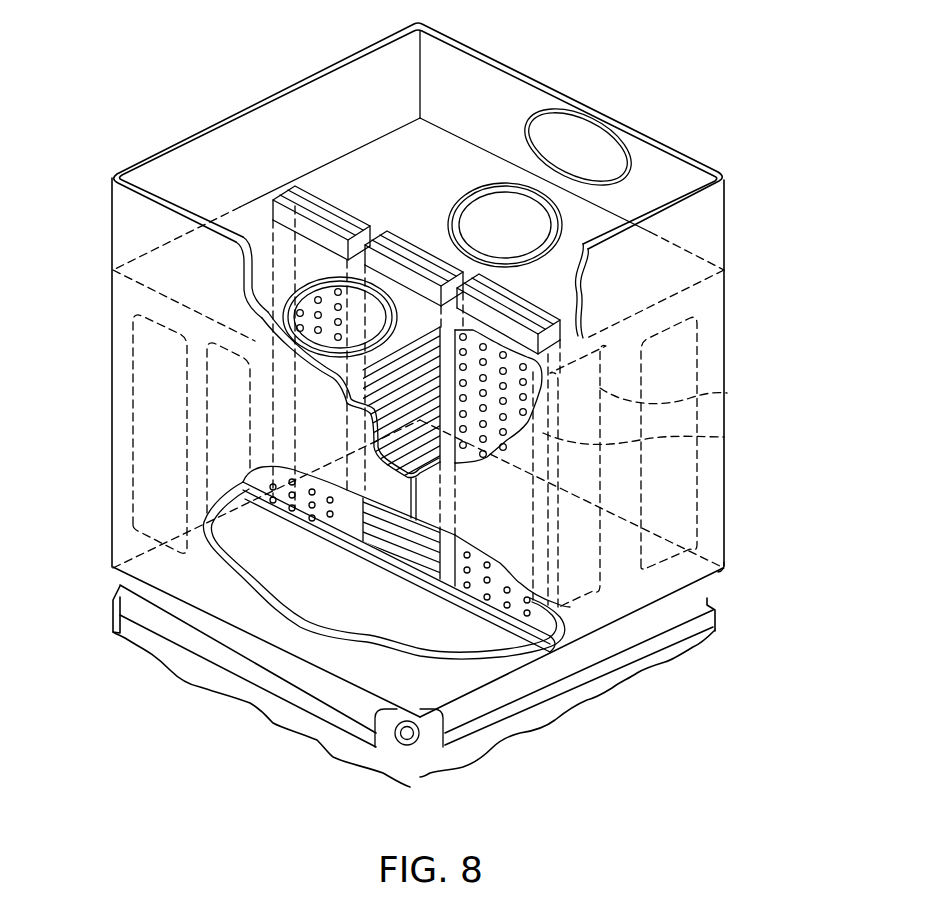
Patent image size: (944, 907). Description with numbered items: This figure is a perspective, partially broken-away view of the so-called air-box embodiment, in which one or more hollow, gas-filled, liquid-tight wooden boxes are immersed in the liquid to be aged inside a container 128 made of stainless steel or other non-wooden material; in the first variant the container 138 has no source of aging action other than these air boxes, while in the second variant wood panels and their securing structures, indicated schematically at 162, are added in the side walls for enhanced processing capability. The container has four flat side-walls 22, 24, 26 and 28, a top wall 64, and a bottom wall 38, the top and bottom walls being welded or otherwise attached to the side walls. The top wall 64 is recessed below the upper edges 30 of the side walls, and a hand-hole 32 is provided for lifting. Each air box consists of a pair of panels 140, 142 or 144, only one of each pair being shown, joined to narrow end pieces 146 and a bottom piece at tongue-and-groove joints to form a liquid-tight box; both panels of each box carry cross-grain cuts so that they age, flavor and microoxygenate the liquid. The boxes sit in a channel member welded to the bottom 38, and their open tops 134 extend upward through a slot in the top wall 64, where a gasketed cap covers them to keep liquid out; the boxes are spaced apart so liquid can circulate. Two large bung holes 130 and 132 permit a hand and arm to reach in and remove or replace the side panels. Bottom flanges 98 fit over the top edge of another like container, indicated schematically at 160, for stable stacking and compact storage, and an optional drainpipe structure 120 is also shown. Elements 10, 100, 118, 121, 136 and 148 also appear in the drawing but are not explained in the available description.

The section line indicator 10 is at (335, 246).
The side-wall 22 is at (483, 77).
The side-wall 24 is at (363, 83).
The side-wall 26 is at (127, 217).
The side-wall 28 is at (707, 220).
The upper edges of the side-walls 30 is at (172, 150).
The hand-hole 32 is at (600, 140).
The bottom wall 38 is at (713, 578).
The top wall 64 is at (240, 220).
The bottom flanges 98 is at (183, 632).
The corner fastening location 100 is at (100, 590).
The right hub bracket 118 is at (428, 745).
The drainpipe structure 120 is at (410, 747).
The left hub bracket 121 is at (392, 747).
The container 128 is at (642, 100).
The bung hole 130 is at (537, 235).
The bung hole 132 is at (377, 315).
The open tops of the boxes 134 is at (317, 193).
The second guide rail 136 is at (425, 247).
The container 138 is at (584, 290).
The panel 140 is at (287, 490).
The panel 142 is at (387, 567).
The panel 144 is at (490, 600).
The narrow end pieces 146 is at (724, 437).
The base rail 148 is at (447, 603).
The another like container 160 is at (123, 638).
The additional panels and securing structures 162 is at (233, 337).